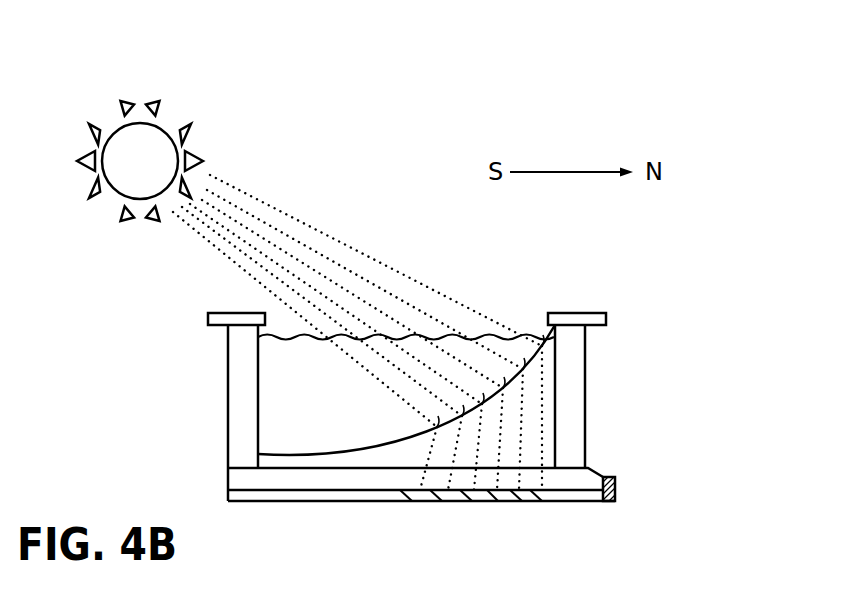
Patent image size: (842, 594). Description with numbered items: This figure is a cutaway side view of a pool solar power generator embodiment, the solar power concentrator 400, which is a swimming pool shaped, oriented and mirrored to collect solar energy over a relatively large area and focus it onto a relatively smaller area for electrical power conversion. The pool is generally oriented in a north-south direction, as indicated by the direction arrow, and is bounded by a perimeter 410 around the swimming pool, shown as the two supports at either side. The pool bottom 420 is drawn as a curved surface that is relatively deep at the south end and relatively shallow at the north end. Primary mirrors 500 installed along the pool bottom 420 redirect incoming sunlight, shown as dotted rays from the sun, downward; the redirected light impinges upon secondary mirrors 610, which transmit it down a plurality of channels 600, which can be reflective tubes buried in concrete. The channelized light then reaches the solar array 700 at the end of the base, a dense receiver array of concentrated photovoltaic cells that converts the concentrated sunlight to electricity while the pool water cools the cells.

The solar power concentrator 400 is at (400, 115).
The perimeter 410 is at (235, 313).
The pool bottom 420 is at (363, 446).
The primary mirrors 500 is at (505, 391).
The channels 600 is at (228, 498).
The secondary mirrors 610 is at (513, 497).
The solar array 700 is at (613, 492).